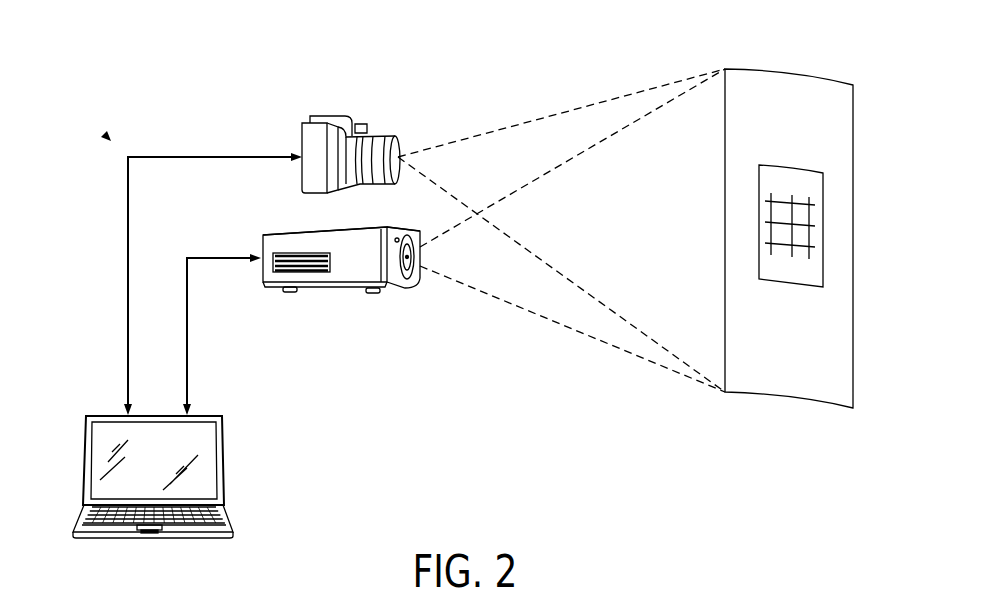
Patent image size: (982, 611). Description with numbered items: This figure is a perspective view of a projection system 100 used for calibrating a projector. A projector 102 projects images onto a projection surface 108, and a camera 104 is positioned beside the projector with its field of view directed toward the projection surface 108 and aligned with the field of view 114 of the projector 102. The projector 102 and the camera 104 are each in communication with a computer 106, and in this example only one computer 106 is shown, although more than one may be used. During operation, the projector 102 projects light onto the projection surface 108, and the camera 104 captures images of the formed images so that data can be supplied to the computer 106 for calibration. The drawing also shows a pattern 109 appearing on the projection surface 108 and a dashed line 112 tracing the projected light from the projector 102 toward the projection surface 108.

The projection system 100 is at (106, 136).
The projector 102 is at (322, 288).
The camera 104 is at (328, 117).
The computer 106 is at (223, 458).
The projection surface 108 is at (786, 70).
The calibration pattern 109 is at (788, 286).
The projected image light path 112 is at (565, 325).
The field of view 114 is at (558, 112).